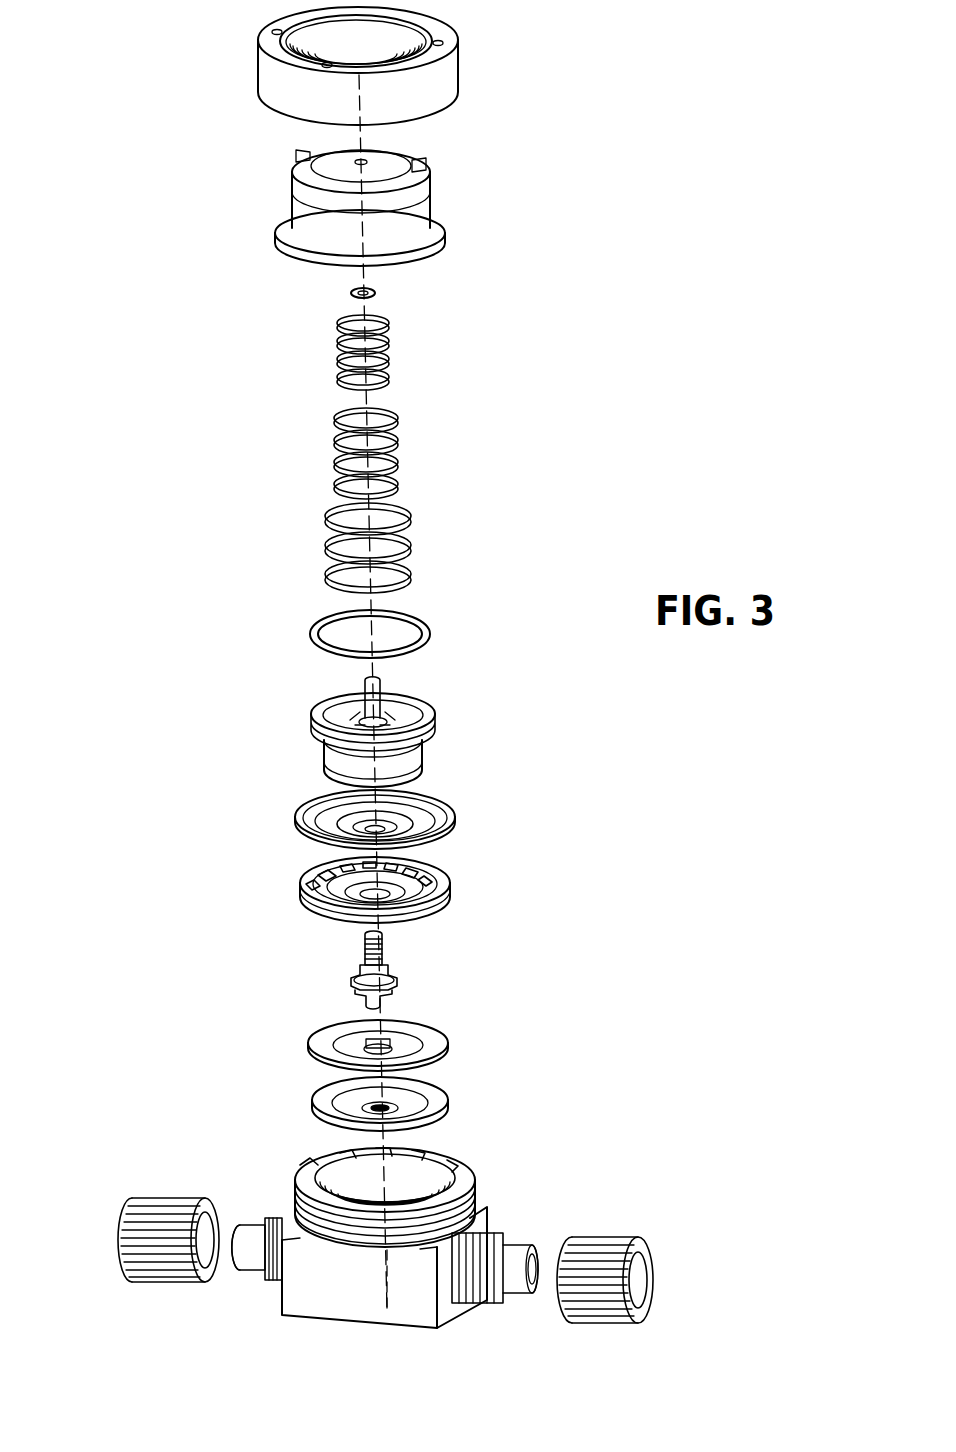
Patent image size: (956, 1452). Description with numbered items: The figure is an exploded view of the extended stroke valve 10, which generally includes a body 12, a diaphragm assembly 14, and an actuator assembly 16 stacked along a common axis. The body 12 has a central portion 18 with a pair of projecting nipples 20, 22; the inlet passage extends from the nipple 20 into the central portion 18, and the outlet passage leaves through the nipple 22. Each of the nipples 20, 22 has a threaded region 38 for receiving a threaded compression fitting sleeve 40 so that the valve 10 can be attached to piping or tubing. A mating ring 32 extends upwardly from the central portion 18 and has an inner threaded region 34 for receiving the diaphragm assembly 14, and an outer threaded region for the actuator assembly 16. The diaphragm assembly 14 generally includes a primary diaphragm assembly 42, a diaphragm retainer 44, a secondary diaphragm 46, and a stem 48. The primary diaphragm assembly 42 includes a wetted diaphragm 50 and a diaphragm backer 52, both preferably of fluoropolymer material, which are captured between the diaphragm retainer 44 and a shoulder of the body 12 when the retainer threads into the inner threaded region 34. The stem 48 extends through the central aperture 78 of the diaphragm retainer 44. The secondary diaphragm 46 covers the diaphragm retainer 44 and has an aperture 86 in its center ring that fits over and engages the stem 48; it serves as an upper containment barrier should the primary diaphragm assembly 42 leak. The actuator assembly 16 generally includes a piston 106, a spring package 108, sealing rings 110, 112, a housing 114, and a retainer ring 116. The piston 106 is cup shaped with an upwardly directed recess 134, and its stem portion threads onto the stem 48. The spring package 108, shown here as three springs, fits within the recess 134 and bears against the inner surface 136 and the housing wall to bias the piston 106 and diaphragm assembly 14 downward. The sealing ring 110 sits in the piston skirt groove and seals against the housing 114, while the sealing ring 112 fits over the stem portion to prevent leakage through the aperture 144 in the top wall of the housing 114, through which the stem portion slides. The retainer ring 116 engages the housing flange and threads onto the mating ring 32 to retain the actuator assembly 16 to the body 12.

The extended stroke valve 10 is at (203, 646).
The body 12 is at (368, 1259).
The diaphragm assembly 14 is at (448, 785).
The actuator assembly 16 is at (438, 3).
The central portion 18 is at (322, 1283).
The nipple 20 is at (497, 1296).
The nipple 22 is at (262, 1275).
The mating ring 32 is at (432, 1176).
The inner threaded region 34 is at (450, 1147).
The threaded region 38 is at (278, 1218).
The threaded compression fitting sleeve 40 is at (124, 1210).
The primary diaphragm assembly 42 is at (363, 1053).
The diaphragm retainer 44 is at (329, 892).
The secondary diaphragm 46 is at (376, 797).
The stem 48 is at (355, 975).
The wetted diaphragm 50 is at (448, 1086).
The diaphragm backer 52 is at (428, 1022).
The central aperture 78 is at (330, 870).
The aperture 86 is at (395, 825).
The piston 106 is at (343, 711).
The spring package 108 is at (328, 313).
The sealing ring 110 is at (428, 619).
The sealing ring 112 is at (351, 293).
The housing 114 is at (295, 205).
The retainer ring 116 is at (258, 66).
The recess 134 is at (404, 694).
The inner surface 136 is at (352, 722).
The aperture 144 is at (366, 161).